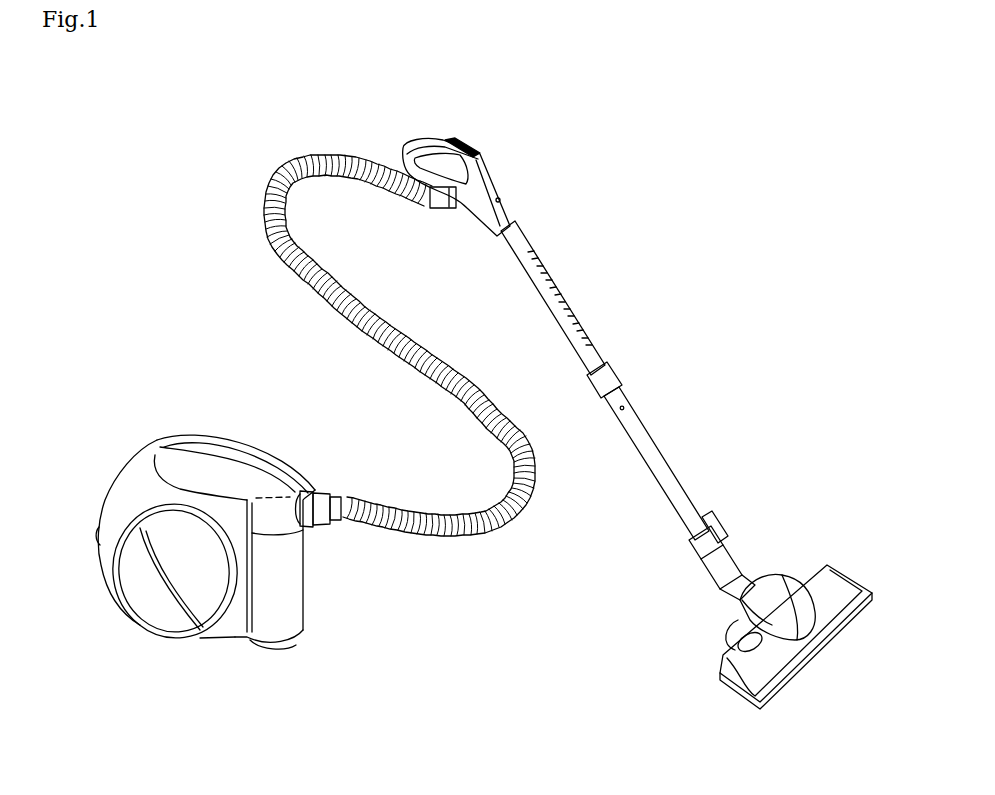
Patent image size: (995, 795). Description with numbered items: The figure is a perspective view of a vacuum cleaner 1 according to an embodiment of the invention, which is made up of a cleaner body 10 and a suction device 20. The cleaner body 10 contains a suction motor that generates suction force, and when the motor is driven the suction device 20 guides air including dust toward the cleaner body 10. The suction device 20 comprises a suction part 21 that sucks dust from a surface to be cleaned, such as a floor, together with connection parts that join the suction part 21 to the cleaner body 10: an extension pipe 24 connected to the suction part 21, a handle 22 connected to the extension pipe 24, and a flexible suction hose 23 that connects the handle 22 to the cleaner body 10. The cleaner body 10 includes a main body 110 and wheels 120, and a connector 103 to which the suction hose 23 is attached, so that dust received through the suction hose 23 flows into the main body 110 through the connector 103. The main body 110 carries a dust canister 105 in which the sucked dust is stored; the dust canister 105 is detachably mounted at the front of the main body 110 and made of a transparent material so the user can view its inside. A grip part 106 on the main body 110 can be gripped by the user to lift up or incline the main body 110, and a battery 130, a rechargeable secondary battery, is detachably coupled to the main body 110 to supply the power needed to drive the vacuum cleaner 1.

The vacuum cleaner 1 is at (170, 82).
The cleaner body 10 is at (130, 434).
The suction device 20 is at (594, 288).
The suction part 21 is at (812, 582).
The handle 22 is at (434, 136).
The suction hose 23 is at (358, 499).
The extension pipe 24 is at (648, 445).
The connector 103 is at (318, 492).
The dust canister 105 is at (293, 588).
The grip part 106 is at (222, 440).
The main body 110 is at (130, 478).
The wheels 120 is at (148, 612).
The battery 130 is at (97, 531).